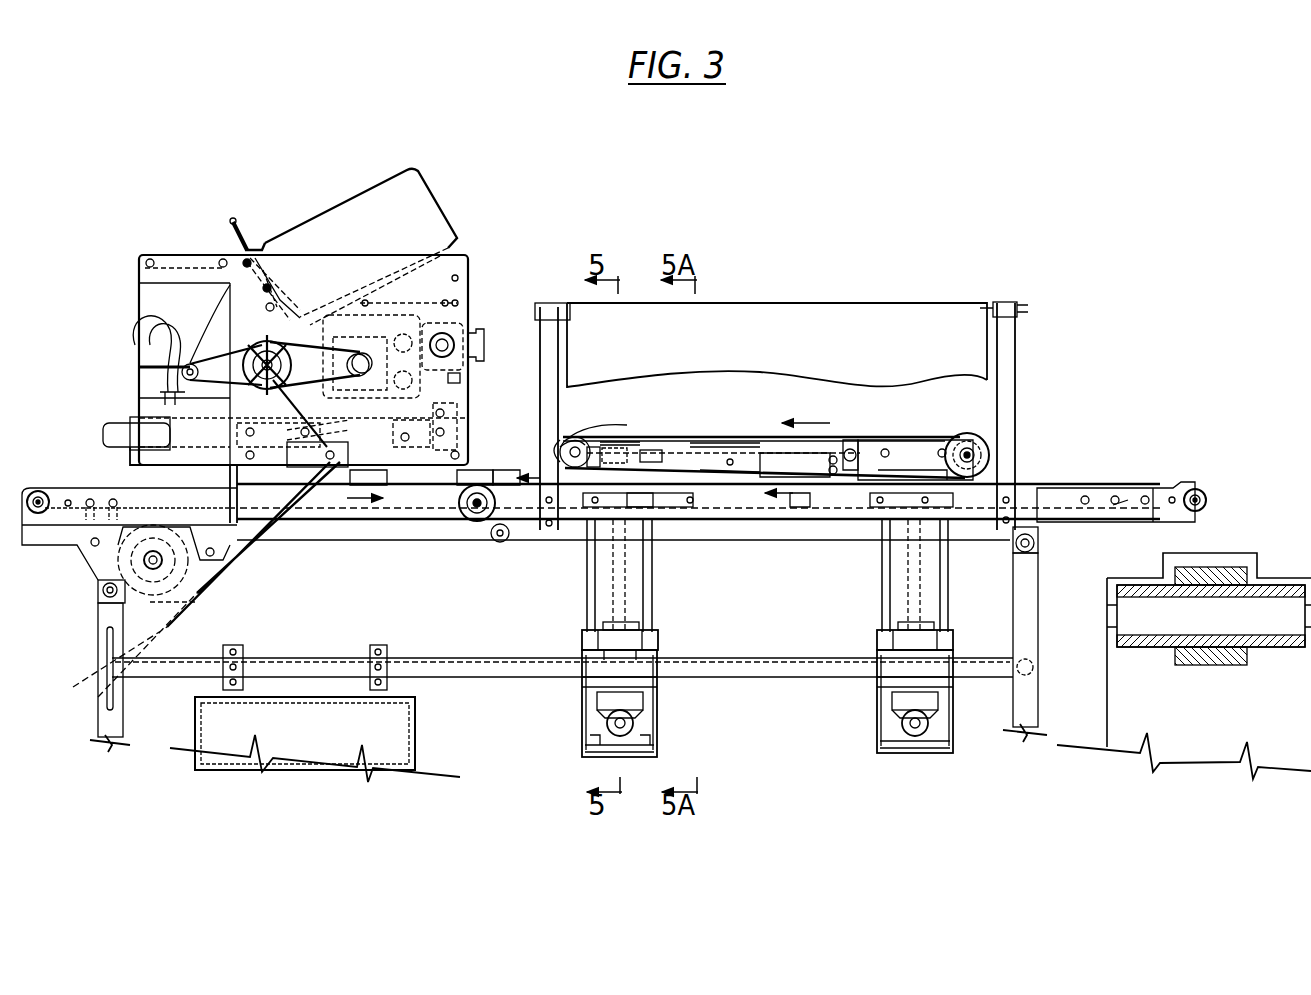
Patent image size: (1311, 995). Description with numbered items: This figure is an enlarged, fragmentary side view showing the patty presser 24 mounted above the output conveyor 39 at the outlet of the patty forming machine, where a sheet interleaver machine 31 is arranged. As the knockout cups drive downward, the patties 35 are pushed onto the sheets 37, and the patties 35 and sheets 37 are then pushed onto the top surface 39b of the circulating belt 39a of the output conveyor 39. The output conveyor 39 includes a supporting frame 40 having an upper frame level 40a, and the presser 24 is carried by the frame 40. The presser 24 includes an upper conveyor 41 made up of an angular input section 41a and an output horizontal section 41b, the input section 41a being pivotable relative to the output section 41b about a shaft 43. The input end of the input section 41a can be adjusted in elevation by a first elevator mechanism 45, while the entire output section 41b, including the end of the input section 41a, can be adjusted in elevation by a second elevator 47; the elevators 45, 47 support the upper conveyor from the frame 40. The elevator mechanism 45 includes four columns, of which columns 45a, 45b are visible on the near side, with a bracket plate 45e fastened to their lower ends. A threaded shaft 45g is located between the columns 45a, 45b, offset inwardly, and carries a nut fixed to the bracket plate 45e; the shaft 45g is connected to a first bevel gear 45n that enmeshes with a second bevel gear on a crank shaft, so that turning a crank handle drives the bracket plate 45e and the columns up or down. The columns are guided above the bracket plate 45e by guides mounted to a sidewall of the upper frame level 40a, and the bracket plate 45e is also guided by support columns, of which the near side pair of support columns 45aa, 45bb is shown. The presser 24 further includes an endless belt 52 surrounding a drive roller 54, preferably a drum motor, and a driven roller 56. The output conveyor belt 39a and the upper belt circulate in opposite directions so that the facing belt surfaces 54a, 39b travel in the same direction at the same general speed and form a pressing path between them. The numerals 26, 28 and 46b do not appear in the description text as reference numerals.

The patty presser 24 is at (873, 325).
The conveyor 26 is at (1081, 482).
The roller assembly 28 is at (1249, 534).
The sheet interleaver machine 31 is at (478, 268).
The patties 35 is at (708, 437).
The sheets 37 is at (336, 522).
The output conveyor 39 is at (354, 532).
The circulating belt 39a is at (518, 466).
The top surface 39b is at (505, 466).
The supporting frame 40 is at (1043, 587).
The upper frame level 40a is at (803, 497).
The upper conveyor 41 is at (688, 432).
The angular input section 41a is at (760, 435).
The output horizontal section 41b is at (937, 440).
The shaft 43 is at (850, 448).
The first elevator mechanism 45 is at (627, 667).
The column 45a is at (587, 600).
The support column 45aa is at (582, 647).
The column 45b is at (653, 598).
The support column 45bb is at (648, 652).
The bracket plate 45e is at (584, 647).
The threaded shaft 45g is at (613, 574).
The first bevel gear 45n is at (640, 700).
The rail 46b is at (737, 665).
The second elevator 47 is at (881, 604).
The endless belt 52 is at (743, 435).
The drive roller 54 is at (972, 440).
The facing belt surface 54a is at (762, 470).
The driven roller 56 is at (562, 447).